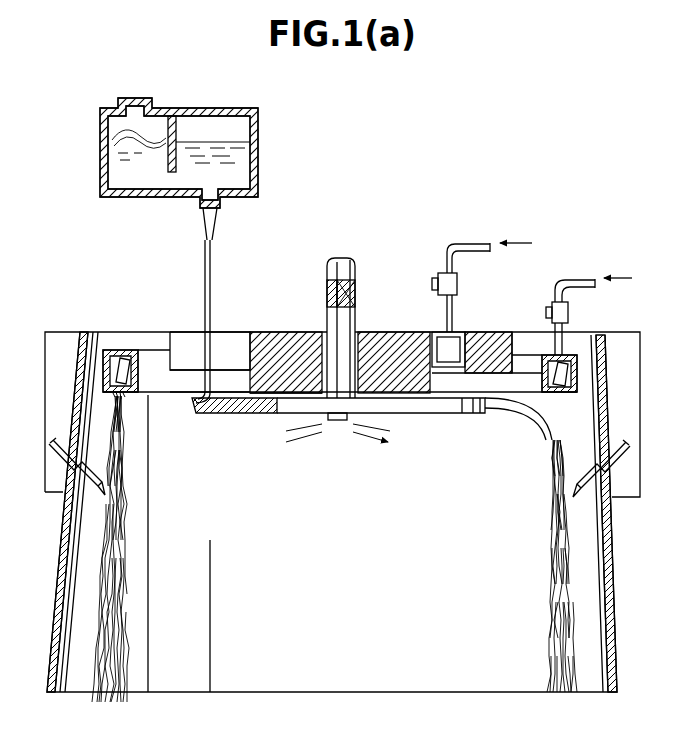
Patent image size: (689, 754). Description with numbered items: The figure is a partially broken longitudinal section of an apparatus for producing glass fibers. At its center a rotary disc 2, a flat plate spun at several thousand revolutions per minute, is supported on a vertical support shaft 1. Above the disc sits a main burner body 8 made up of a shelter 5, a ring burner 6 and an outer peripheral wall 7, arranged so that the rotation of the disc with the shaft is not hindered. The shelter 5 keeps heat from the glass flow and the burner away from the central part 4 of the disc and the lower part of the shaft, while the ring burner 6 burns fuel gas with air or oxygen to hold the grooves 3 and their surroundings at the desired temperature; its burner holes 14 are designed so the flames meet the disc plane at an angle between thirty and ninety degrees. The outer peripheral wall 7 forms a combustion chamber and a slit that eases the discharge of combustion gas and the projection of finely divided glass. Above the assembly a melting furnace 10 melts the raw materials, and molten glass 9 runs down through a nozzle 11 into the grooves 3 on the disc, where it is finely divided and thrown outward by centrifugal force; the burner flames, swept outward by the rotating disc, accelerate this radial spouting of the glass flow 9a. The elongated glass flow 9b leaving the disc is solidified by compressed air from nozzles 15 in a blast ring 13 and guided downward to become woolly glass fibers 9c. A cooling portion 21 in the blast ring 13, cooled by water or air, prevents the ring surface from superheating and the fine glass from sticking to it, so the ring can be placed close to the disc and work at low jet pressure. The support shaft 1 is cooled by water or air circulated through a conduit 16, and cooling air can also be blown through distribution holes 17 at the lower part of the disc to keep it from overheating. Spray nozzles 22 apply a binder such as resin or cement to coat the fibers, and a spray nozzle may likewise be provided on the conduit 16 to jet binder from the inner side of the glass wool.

The vertical shaft 1 is at (340, 266).
The rotary disc 2 is at (419, 416).
The grooves 3 is at (208, 413).
The central part 4 is at (297, 392).
The shelter 5 is at (386, 332).
The ring burner 6 is at (452, 334).
The outer peripheral wall 7 is at (492, 335).
The main burner body 8 is at (264, 330).
The molten glass 9 is at (211, 276).
The glass flow 9a is at (190, 400).
The elongated glass flow 9b is at (503, 405).
The woolly glass fibers 9c is at (122, 536).
The melting furnace 10 is at (258, 138).
The nozzle 11 is at (204, 206).
The blast ring 13 is at (120, 350).
The burner holes 14 is at (237, 413).
The nozzles 15 is at (125, 398).
The conduit 16 is at (345, 286).
The distribution holes 17 is at (336, 421).
The cooling portion 21 is at (143, 350).
The spray nozzles 22 is at (95, 493).